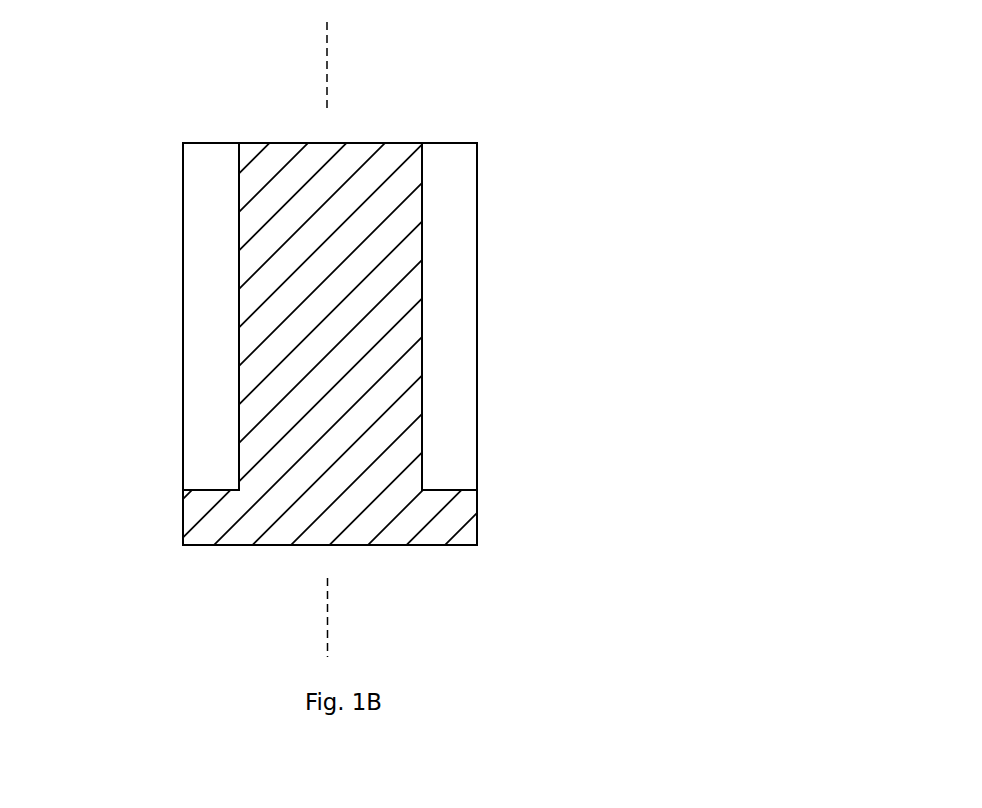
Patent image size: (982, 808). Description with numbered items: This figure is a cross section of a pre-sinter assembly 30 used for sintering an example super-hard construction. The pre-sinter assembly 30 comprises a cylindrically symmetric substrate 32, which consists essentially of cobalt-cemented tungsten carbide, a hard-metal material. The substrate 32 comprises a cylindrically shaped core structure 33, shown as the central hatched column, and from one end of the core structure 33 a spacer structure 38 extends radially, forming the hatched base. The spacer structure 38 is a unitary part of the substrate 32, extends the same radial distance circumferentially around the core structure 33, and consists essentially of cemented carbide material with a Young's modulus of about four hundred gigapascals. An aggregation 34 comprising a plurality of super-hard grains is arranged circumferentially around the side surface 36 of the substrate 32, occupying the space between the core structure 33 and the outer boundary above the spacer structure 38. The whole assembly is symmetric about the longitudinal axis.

The pre-sinter assembly 30 is at (557, 70).
The substrate 32 is at (382, 441).
The core structure 33 is at (235, 369).
The aggregation 34 is at (448, 367).
The side surface 36 is at (422, 283).
The spacer structure 38 is at (441, 522).